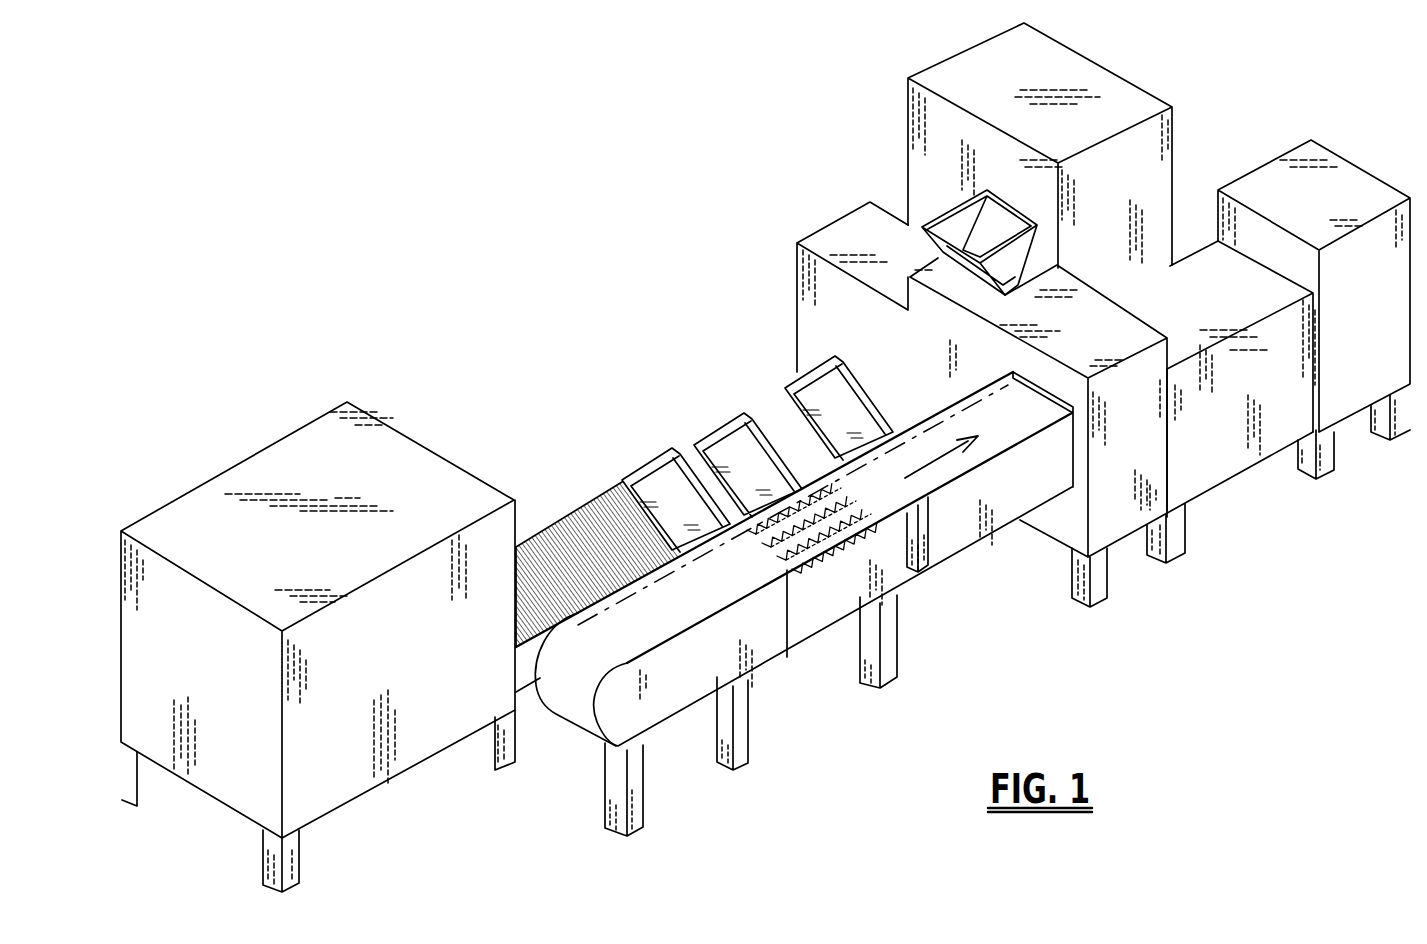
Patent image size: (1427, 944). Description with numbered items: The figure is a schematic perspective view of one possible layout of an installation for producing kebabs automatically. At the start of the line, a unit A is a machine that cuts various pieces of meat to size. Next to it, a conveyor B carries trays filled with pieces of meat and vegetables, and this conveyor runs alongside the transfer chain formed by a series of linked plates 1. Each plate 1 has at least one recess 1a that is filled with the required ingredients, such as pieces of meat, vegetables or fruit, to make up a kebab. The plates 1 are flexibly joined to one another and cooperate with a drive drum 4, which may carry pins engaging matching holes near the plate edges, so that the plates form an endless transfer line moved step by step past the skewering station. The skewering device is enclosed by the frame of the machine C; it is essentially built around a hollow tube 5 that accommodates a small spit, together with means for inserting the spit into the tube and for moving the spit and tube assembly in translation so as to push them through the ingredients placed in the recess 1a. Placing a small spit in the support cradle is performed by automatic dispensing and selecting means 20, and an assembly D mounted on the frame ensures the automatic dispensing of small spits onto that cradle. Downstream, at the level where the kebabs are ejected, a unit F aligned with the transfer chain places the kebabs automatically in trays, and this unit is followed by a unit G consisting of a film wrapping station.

The unit A is at (395, 443).
The conveyor B is at (597, 507).
The frame of the machine C is at (800, 264).
The automatic small-spit dispensing assembly D is at (1073, 62).
The automatic tray placement unit F is at (1222, 458).
The film wrapping station G is at (1311, 144).
The plates 1 is at (807, 560).
The recess 1a is at (860, 533).
The drive drum 4 is at (610, 730).
The hollow tube 5 is at (925, 385).
The automatic dispensing and selecting means 20 is at (965, 215).